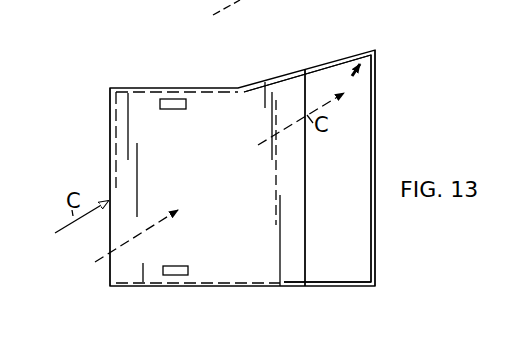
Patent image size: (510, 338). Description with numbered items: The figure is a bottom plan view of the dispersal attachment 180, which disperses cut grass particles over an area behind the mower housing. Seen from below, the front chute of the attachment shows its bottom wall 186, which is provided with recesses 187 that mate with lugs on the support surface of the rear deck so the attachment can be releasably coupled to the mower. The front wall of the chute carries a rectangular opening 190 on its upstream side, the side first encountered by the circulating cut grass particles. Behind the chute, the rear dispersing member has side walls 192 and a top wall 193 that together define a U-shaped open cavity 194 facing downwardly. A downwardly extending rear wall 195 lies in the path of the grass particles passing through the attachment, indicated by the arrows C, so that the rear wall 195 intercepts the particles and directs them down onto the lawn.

The dispersal attachment 180 is at (207, 86).
The bottom wall 186 is at (145, 100).
The recesses 187 is at (186, 109).
The rectangular opening 190 is at (109, 240).
The side walls 192 is at (328, 67).
The top wall 193 is at (355, 187).
The U-shaped open cavity 194 is at (365, 50).
The rear wall 195 is at (376, 112).